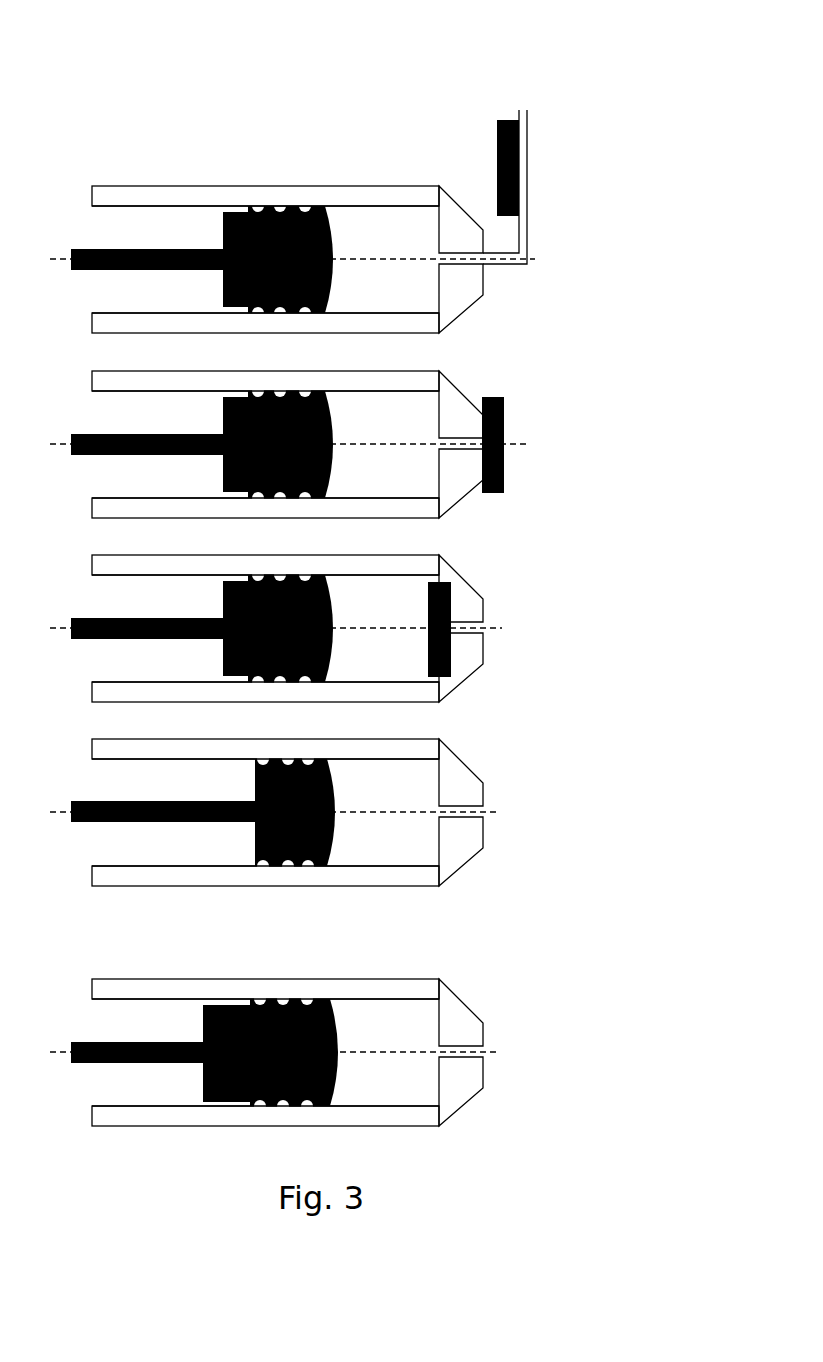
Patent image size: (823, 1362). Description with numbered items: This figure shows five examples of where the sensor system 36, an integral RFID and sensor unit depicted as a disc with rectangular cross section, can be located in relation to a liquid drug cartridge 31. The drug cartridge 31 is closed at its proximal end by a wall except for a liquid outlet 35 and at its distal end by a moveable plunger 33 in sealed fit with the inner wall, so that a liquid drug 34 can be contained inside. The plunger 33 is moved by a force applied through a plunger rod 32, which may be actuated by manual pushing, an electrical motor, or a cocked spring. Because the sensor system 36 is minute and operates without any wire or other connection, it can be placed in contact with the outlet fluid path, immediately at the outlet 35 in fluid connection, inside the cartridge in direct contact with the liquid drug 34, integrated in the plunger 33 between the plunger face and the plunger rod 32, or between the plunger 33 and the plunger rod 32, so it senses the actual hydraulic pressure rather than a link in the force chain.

The drug cartridge 31 is at (125, 183).
The plunger rod 32 is at (185, 237).
The moveable plunger 33 is at (275, 200).
The liquid drug 34 is at (353, 233).
The liquid outlet 35 is at (432, 252).
The sensor system 36 is at (492, 150).